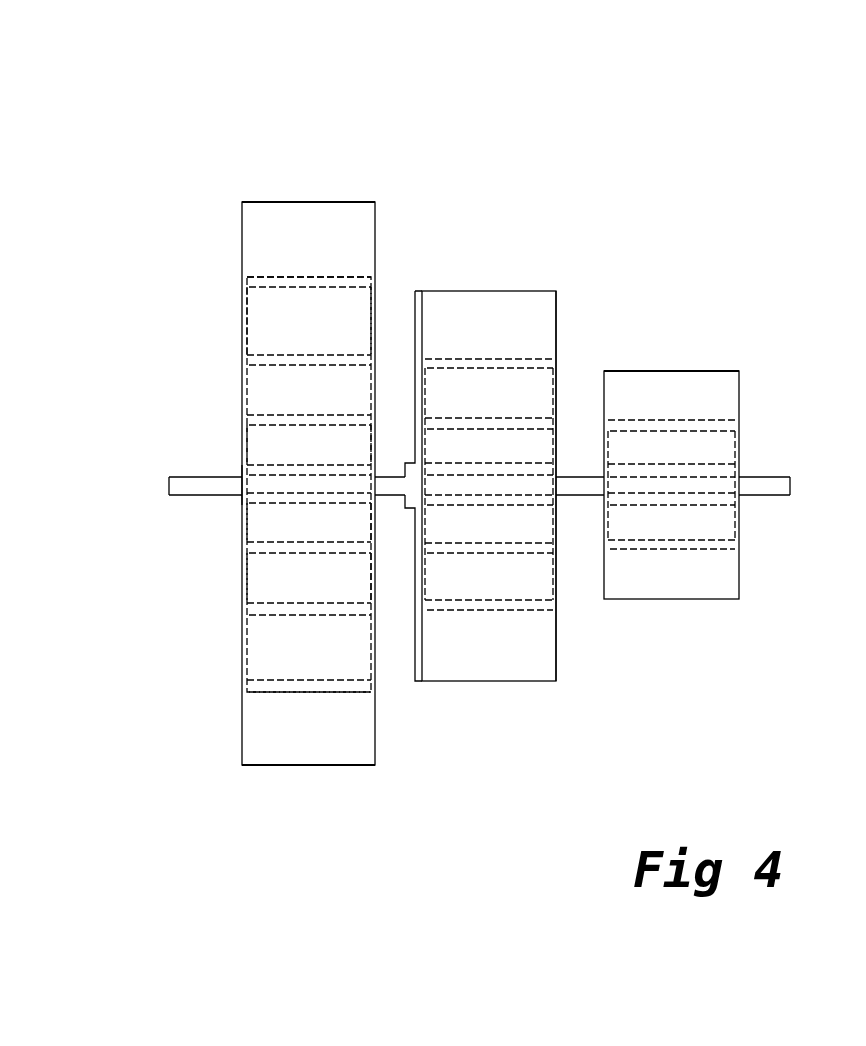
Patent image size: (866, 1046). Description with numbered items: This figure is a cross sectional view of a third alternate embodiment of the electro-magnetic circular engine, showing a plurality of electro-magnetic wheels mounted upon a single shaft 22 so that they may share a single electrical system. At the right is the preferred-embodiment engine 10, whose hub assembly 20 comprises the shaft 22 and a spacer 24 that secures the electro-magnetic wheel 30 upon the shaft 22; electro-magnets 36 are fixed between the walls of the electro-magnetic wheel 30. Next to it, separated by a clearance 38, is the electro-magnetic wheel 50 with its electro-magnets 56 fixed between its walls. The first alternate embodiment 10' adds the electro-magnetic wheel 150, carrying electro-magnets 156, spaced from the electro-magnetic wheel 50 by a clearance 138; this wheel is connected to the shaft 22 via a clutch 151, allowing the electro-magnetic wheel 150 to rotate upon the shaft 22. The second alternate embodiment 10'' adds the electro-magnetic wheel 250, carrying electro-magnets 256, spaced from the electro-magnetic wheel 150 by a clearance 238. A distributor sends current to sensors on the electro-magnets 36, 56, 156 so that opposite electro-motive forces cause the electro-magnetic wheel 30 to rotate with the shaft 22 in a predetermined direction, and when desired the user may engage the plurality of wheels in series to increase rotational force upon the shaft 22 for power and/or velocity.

The electro-magnetic circular engine 10 is at (671, 359).
The first alternate embodiment 10' is at (491, 357).
The second alternate embodiment 10'' is at (313, 407).
The hub assembly 20 is at (231, 471).
The shaft 22 is at (200, 478).
The spacer 24 is at (262, 497).
The electro-magnetic wheel 30 is at (238, 429).
The electro-magnets 36 is at (262, 522).
The clearance 38 is at (790, 397).
The electro-magnetic wheel 50 is at (564, 368).
The electro-magnets 56 is at (275, 578).
The clearance 138 is at (262, 357).
The electro-magnetic wheel 150 is at (241, 309).
The clutch 151 is at (415, 310).
The electro-magnets 156 is at (258, 330).
The clearance 238 is at (262, 287).
The electro-magnetic wheel 250 is at (304, 198).
The electro-magnets 256 is at (268, 220).